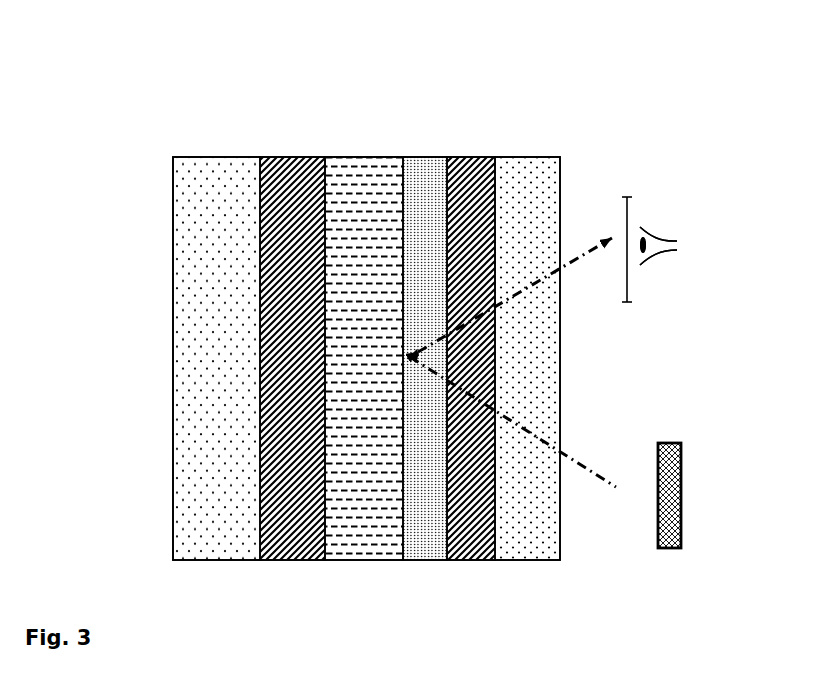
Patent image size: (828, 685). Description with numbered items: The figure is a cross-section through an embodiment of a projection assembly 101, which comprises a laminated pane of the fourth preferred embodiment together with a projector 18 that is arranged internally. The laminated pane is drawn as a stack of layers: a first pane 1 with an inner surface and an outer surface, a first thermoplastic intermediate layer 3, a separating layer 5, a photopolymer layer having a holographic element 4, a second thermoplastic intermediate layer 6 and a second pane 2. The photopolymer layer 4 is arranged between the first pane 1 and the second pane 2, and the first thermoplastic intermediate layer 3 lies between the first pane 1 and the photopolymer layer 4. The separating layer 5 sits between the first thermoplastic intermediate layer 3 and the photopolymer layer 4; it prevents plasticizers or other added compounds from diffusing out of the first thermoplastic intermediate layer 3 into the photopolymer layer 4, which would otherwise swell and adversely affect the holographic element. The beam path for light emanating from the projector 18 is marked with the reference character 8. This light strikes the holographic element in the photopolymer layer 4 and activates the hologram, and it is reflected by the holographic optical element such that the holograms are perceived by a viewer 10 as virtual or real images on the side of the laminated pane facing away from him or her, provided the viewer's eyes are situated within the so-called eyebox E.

The projection assembly 101 is at (119, 165).
The first pane 1 is at (238, 203).
The first thermoplastic intermediate layer 3 is at (290, 172).
The separating layer 5 is at (373, 168).
The photopolymer layer having a holographic element 4 is at (427, 170).
The second thermoplastic intermediate layer 6 is at (470, 178).
The second pane 2 is at (523, 185).
The beam path 8 is at (525, 370).
The eyebox E is at (649, 201).
The viewer 10 is at (675, 225).
The projector 18 is at (670, 428).